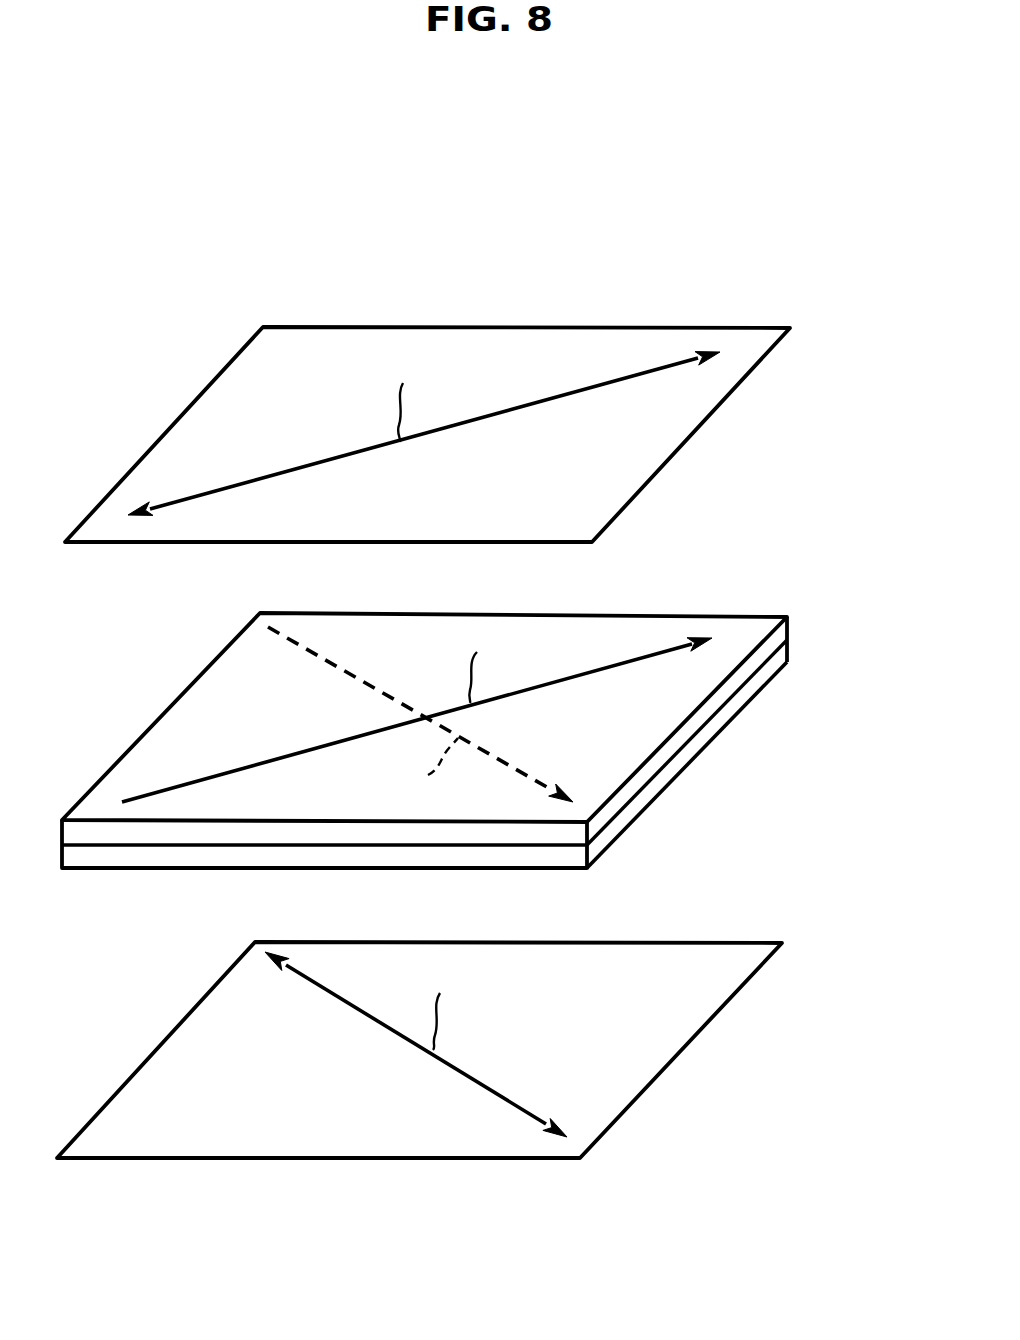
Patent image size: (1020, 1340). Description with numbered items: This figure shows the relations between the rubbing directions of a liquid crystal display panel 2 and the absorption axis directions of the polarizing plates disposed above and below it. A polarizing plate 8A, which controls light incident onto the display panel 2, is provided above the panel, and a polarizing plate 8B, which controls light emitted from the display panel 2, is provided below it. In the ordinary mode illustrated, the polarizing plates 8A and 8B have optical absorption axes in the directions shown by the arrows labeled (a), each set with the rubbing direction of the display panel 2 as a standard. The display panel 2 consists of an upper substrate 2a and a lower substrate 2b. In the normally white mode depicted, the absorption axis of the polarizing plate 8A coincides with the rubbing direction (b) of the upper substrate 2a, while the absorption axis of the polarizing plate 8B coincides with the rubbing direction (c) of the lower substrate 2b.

The polarizing plate 8A is at (758, 364).
The polarizing plate 8B is at (744, 983).
The display panel 2 is at (497, 738).
The upper substrate 2a is at (783, 632).
The lower substrate 2b is at (880, 608).